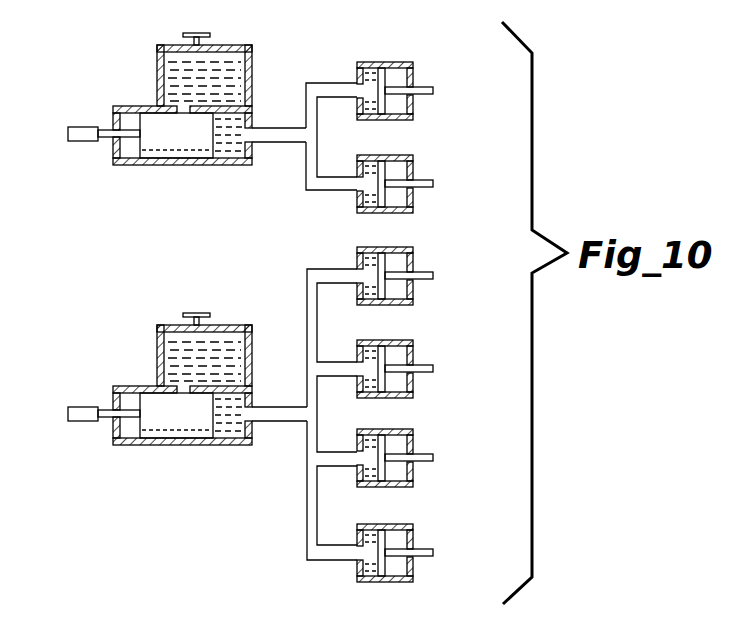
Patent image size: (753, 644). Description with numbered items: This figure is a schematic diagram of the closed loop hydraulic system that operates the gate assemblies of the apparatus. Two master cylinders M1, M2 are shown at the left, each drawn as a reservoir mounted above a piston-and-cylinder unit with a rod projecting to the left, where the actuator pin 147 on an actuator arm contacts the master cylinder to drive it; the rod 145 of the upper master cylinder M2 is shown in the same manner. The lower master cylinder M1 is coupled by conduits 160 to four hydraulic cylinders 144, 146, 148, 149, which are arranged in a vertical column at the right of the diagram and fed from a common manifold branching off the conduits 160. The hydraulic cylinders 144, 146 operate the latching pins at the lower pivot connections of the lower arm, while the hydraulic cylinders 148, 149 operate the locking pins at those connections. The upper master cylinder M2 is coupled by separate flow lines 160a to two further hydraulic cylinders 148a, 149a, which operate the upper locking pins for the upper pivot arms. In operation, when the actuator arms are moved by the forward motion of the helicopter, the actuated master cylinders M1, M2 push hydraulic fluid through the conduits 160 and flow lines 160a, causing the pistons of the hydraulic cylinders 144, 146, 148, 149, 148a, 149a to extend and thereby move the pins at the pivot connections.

The master cylinder M1 is at (153, 372).
The master cylinder M2 is at (153, 80).
The hydraulic cylinder 144 is at (413, 253).
The piston rod 145 is at (77, 142).
The hydraulic cylinder 146 is at (413, 347).
The actuator pin 147 is at (77, 421).
The hydraulic cylinder 148 is at (413, 437).
The hydraulic cylinder 148a is at (413, 70).
The hydraulic cylinder 149 is at (413, 531).
The hydraulic cylinder 149a is at (413, 163).
The conduits 160 is at (305, 492).
The flow lines 160a is at (308, 172).